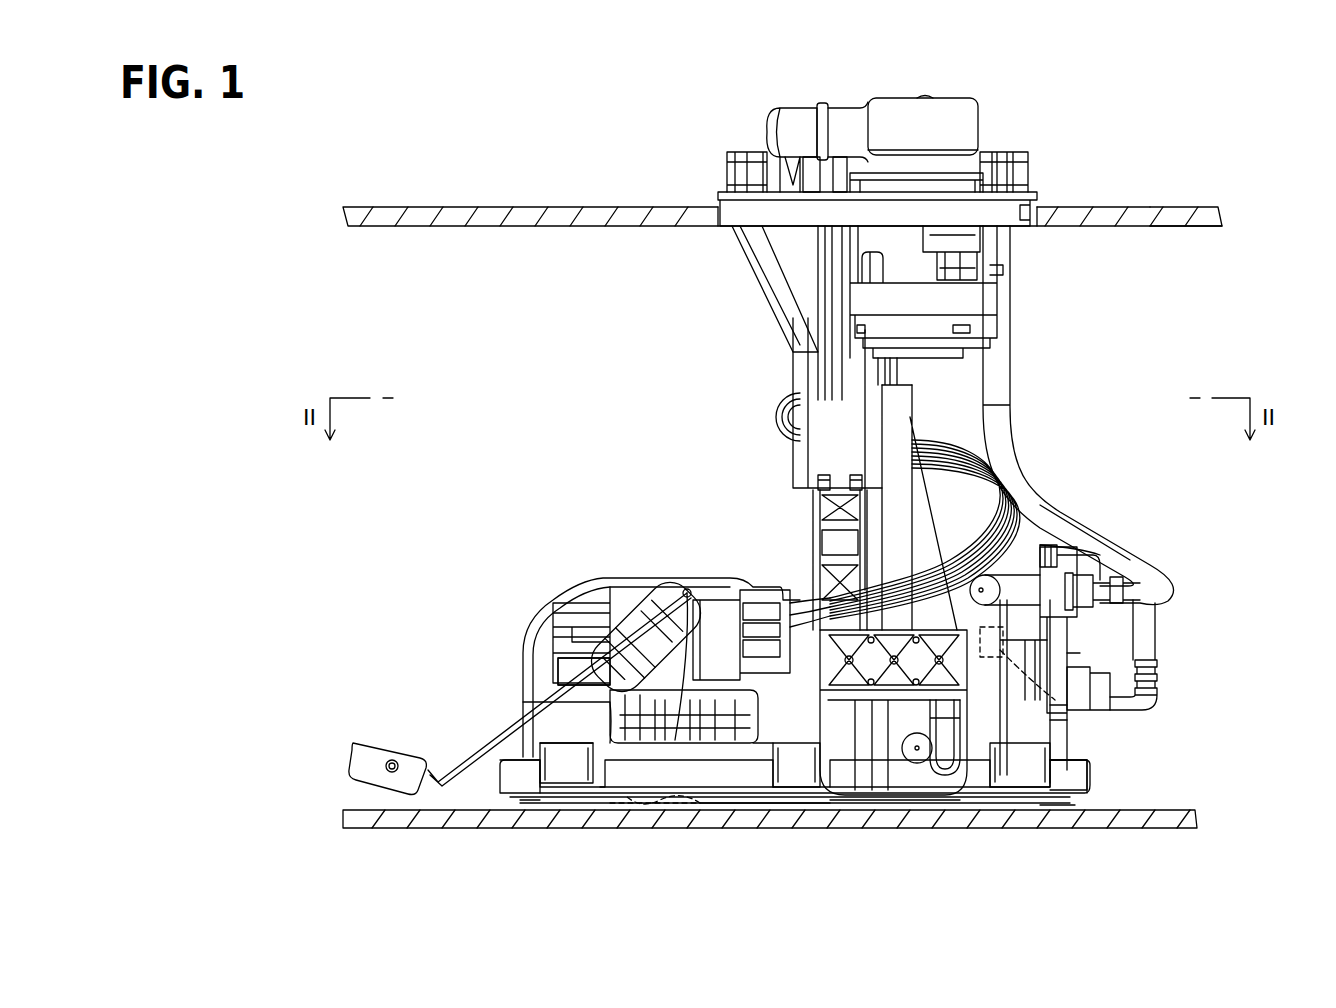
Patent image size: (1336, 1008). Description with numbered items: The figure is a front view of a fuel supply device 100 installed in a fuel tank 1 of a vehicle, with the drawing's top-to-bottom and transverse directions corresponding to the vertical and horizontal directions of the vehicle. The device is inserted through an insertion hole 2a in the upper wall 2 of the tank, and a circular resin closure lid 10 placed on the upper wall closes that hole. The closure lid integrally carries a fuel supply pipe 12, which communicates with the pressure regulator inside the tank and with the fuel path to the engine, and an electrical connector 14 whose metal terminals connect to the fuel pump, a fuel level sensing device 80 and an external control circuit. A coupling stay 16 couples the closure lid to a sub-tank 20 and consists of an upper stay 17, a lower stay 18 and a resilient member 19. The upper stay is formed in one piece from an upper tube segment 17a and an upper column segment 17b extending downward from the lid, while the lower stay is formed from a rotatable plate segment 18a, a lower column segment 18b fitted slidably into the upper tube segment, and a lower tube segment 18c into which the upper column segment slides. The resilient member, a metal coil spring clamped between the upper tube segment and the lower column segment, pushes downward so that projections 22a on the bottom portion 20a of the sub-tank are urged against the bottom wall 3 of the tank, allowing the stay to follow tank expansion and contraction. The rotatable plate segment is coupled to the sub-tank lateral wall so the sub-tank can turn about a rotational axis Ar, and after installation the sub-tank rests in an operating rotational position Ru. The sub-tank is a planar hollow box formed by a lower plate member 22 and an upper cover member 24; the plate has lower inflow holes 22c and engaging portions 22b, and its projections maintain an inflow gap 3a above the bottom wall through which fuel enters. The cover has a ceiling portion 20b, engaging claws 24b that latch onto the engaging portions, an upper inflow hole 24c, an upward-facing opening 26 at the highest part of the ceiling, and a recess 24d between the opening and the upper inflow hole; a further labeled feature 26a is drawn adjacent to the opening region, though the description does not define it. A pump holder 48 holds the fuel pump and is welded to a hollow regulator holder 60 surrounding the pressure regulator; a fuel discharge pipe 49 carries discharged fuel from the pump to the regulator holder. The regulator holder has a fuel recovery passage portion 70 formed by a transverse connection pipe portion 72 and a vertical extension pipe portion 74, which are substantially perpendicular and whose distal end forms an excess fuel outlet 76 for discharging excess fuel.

The fuel tank 1 is at (1173, 197).
The upper wall 2 is at (491, 207).
The insertion hole 2a is at (1037, 192).
The bottom wall 3 is at (440, 820).
The inflow gap 3a is at (1068, 806).
The fuel supply device 100 is at (912, 156).
The closure lid 10 is at (1030, 165).
The fuel supply pipe 12 is at (1013, 430).
The electrical connector 14 is at (935, 452).
The coupling stay 16 is at (795, 365).
The upper stay 17 is at (792, 460).
The upper tube segment 17a is at (800, 420).
The upper column segment 17b is at (870, 380).
The lower stay 18 is at (820, 590).
The rotatable plate segment 18a is at (800, 585).
The lower column segment 18b is at (810, 525).
The lower tube segment 18c is at (893, 451).
The resilient member 19 is at (930, 480).
The sub-tank 20 is at (746, 690).
The bottom portion 20a is at (1073, 780).
The ceiling portion 20b is at (1067, 653).
The lower plate member 22 is at (523, 790).
The projections 22a is at (606, 800).
The engaging portions 22b is at (755, 805).
The lower inflow holes 22c is at (650, 805).
The upper cover member 24 is at (522, 715).
The engaging claws 24b is at (808, 770).
The upper inflow hole 24c is at (553, 672).
The recess 24d is at (687, 590).
The opening 26 is at (1048, 538).
The pump outlet 26a is at (1060, 713).
The pump holder 48 is at (1133, 708).
The fuel discharge pipe 49 is at (1157, 635).
The regulator holder 60 is at (1045, 575).
The fuel recovery passage portion 70 is at (1159, 565).
The connection pipe portion 72 is at (1062, 553).
The extension pipe portion 74 is at (1137, 578).
The excess fuel outlet 76 is at (1055, 742).
The fuel level sensing device 80 is at (600, 622).
The rotational axis Ar is at (915, 750).
The operating rotational position Ru is at (542, 816).